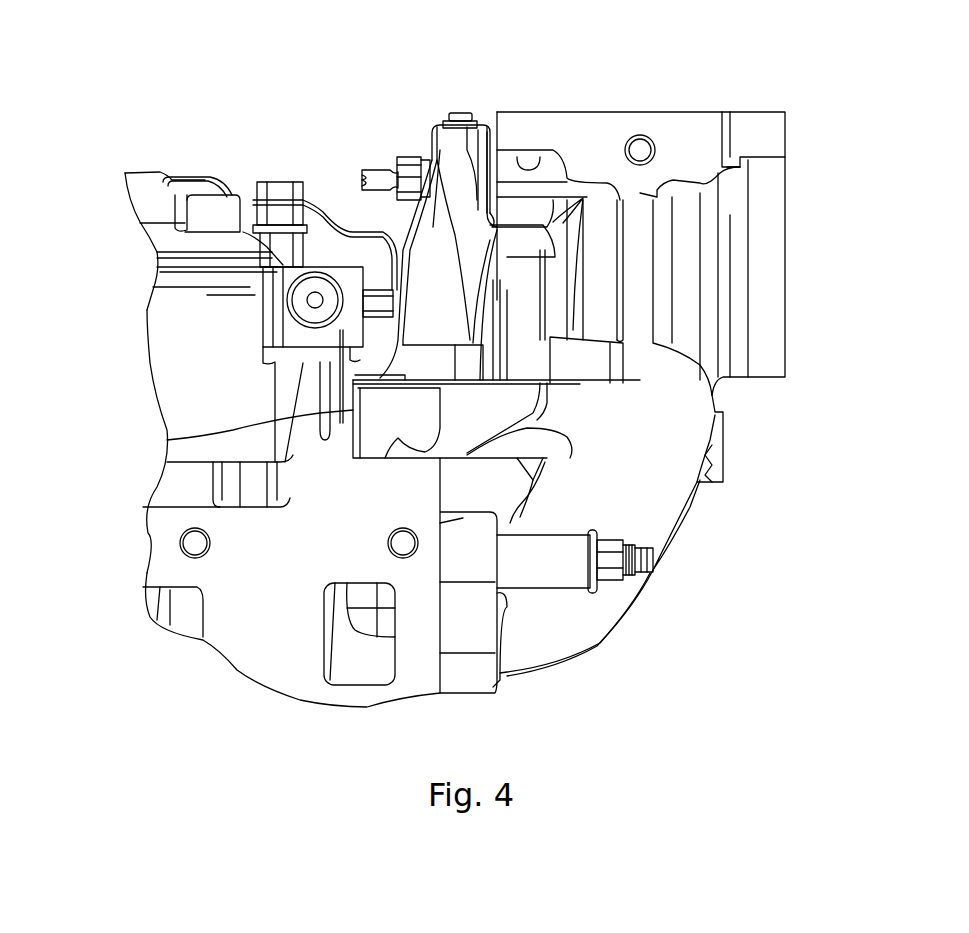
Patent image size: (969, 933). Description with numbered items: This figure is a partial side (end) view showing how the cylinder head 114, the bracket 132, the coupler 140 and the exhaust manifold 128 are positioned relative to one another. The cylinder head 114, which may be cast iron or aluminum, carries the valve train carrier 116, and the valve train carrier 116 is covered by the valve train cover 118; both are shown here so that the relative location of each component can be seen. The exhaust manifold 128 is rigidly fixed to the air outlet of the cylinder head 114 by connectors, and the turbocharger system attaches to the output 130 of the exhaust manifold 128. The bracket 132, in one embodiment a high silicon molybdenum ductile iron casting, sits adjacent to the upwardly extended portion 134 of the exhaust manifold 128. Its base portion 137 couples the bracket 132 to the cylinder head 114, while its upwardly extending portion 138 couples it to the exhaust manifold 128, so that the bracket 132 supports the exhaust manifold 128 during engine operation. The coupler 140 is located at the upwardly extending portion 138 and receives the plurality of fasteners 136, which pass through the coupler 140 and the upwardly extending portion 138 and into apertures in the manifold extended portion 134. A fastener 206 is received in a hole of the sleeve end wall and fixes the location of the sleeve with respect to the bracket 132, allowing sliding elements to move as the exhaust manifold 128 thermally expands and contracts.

The cylinder head 114 is at (157, 543).
The valve train carrier 116 is at (177, 328).
The valve train cover 118 is at (140, 190).
The exhaust manifold 128 is at (722, 498).
The output of the exhaust manifold 130 is at (690, 112).
The bracket 132 is at (470, 157).
The upwardly extended portion of the exhaust manifold 134 is at (687, 255).
The fasteners 136 is at (297, 213).
The base portion of the bracket 137 is at (373, 418).
The upwardly extending portion of the bracket 138 is at (430, 237).
The coupler 140 is at (425, 125).
The fastener 206 is at (458, 112).